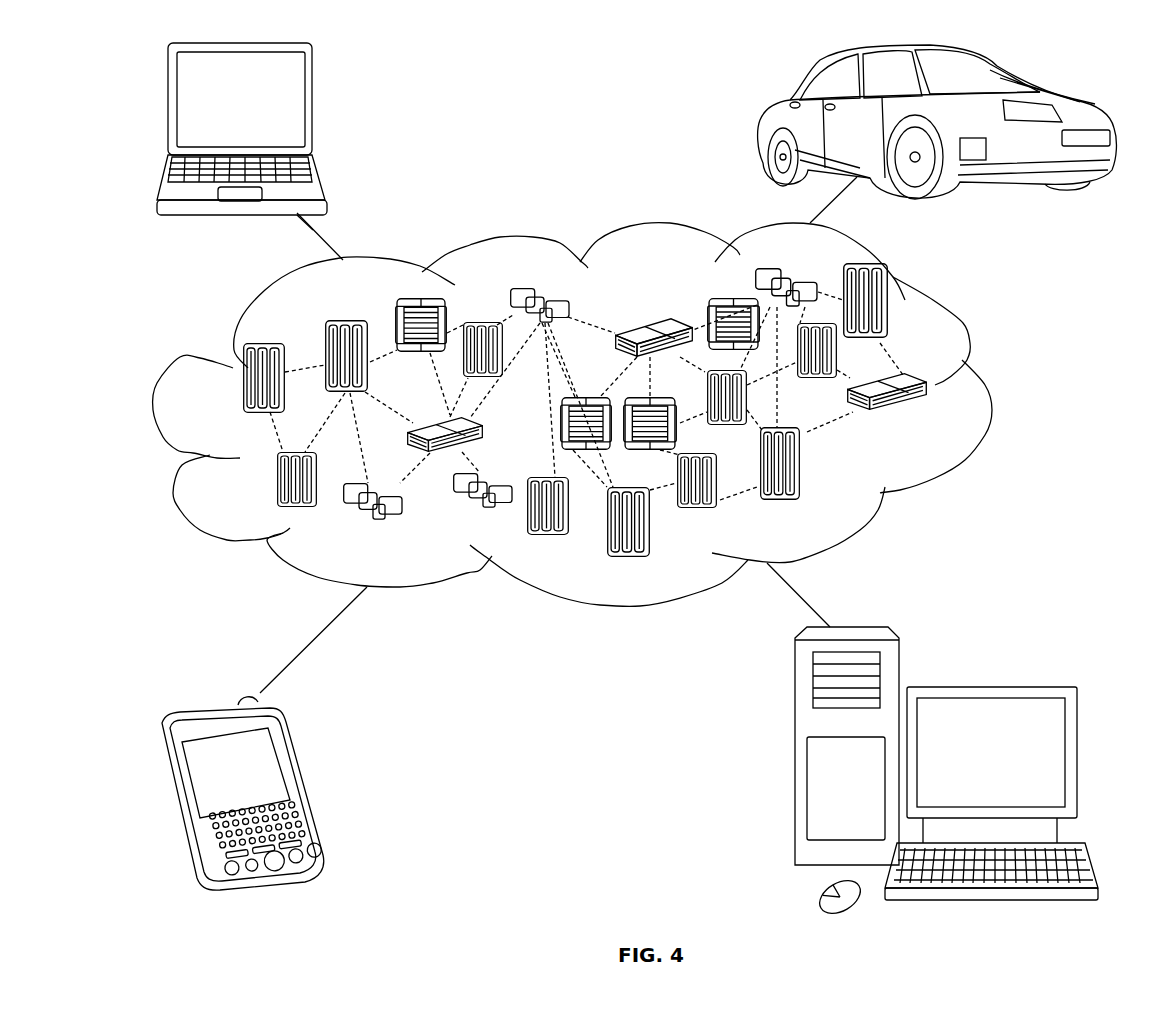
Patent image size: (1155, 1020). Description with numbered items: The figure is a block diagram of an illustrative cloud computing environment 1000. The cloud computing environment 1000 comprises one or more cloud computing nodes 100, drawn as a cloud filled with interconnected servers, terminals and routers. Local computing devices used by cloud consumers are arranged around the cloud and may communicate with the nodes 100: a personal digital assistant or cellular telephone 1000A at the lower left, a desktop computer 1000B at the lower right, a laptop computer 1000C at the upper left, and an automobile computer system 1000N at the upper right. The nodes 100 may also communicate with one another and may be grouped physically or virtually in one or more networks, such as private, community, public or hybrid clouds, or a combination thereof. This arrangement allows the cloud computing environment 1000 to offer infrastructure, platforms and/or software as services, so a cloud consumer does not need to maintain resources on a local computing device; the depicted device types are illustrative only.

The cloud computing environment 1000 is at (990, 390).
The cloud computing nodes 100 is at (933, 419).
The personal digital assistant or cellular telephone 1000A is at (305, 787).
The desktop computer 1000B is at (985, 686).
The laptop computer 1000C is at (312, 108).
The automobile computer system 1000N is at (763, 127).